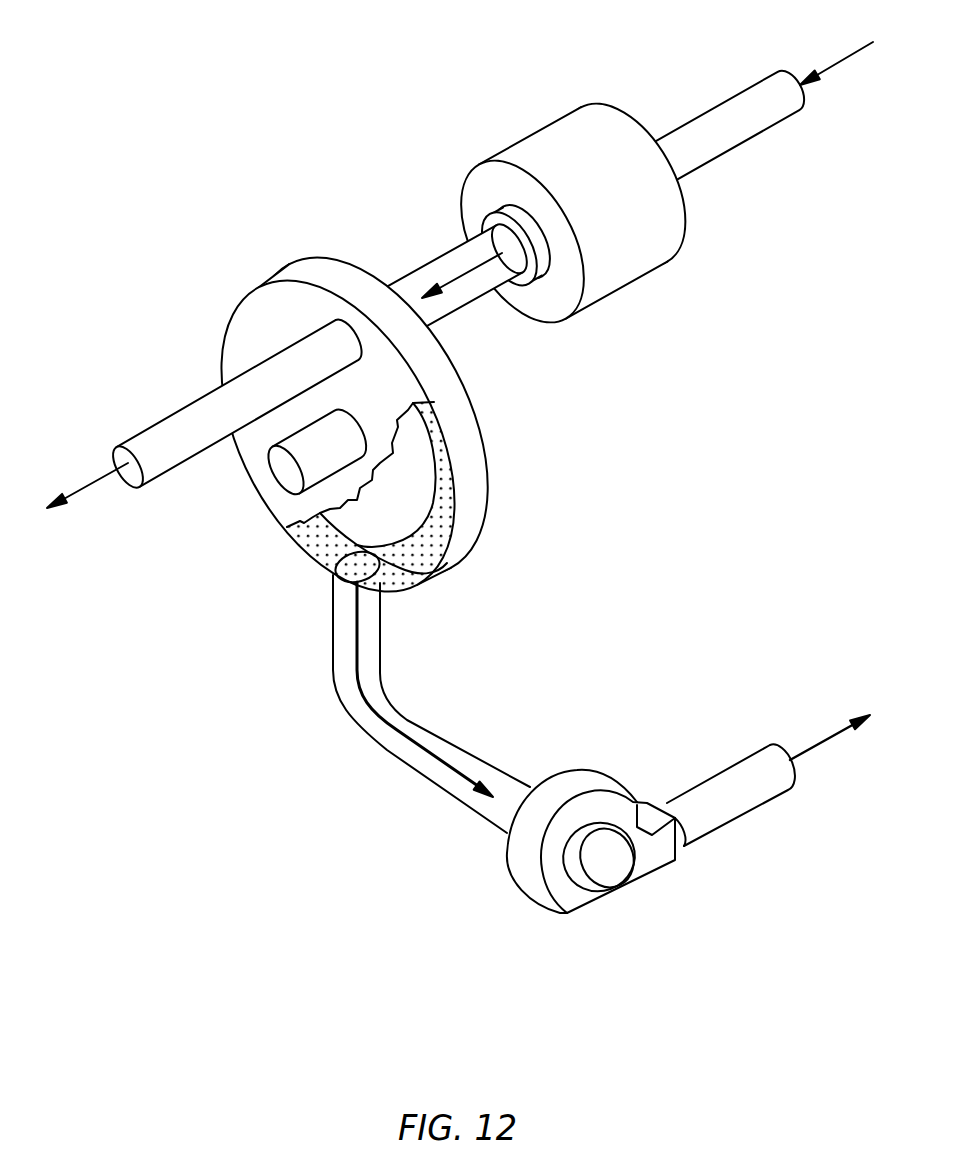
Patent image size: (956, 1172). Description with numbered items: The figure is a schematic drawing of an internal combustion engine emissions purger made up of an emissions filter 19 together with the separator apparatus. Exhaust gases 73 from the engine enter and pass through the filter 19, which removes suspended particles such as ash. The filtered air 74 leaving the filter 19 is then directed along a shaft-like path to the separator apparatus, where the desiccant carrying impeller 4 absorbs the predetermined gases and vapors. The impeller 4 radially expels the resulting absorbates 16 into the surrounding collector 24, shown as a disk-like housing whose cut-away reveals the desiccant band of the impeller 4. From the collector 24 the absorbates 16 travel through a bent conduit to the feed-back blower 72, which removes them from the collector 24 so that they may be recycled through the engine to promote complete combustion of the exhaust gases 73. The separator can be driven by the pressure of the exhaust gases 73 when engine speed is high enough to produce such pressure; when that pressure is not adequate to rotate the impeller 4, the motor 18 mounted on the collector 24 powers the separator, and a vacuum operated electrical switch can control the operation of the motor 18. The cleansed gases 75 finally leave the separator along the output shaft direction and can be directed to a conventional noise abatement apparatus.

The desiccant carrying impeller 4 is at (460, 431).
The absorbates 16 is at (371, 647).
The motor 18 is at (256, 497).
The emissions filter 19 is at (538, 116).
The collector 24 is at (500, 524).
The feed-back blower 72 is at (546, 925).
The exhaust gases 73 is at (838, 50).
The filtered air 74 is at (452, 258).
The cleansed gases 75 is at (95, 466).